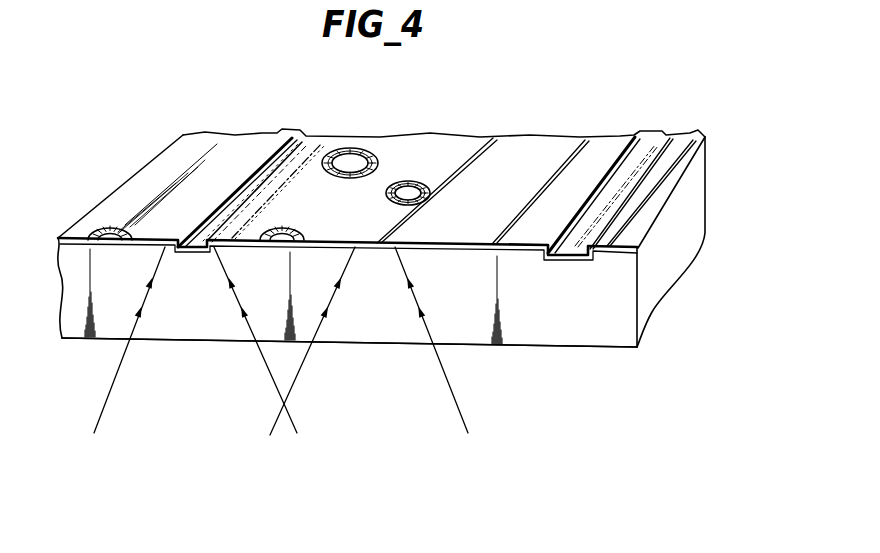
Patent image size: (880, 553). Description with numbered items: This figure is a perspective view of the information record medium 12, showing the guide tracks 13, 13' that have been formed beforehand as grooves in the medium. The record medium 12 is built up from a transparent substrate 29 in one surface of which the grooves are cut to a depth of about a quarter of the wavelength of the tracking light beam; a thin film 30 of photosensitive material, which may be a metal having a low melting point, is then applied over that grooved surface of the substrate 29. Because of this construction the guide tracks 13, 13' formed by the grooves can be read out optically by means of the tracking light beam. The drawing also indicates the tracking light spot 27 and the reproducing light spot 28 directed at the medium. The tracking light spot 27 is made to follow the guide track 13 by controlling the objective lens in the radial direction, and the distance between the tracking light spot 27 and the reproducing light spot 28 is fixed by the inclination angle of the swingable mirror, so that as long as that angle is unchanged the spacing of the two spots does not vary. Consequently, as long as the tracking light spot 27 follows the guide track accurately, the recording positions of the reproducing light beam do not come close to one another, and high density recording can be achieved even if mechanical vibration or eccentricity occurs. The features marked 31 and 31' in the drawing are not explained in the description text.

The information record medium 12 is at (180, 125).
The guide track 13 is at (242, 169).
The guide track 13' is at (622, 270).
The tracking light spot 27 is at (255, 357).
The reproducing light spot 28 is at (432, 362).
The transparent substrate 29 is at (77, 305).
The thin film of photosensitive material 30 is at (62, 237).
The aperture 31 is at (345, 166).
The aperture 31' is at (102, 189).